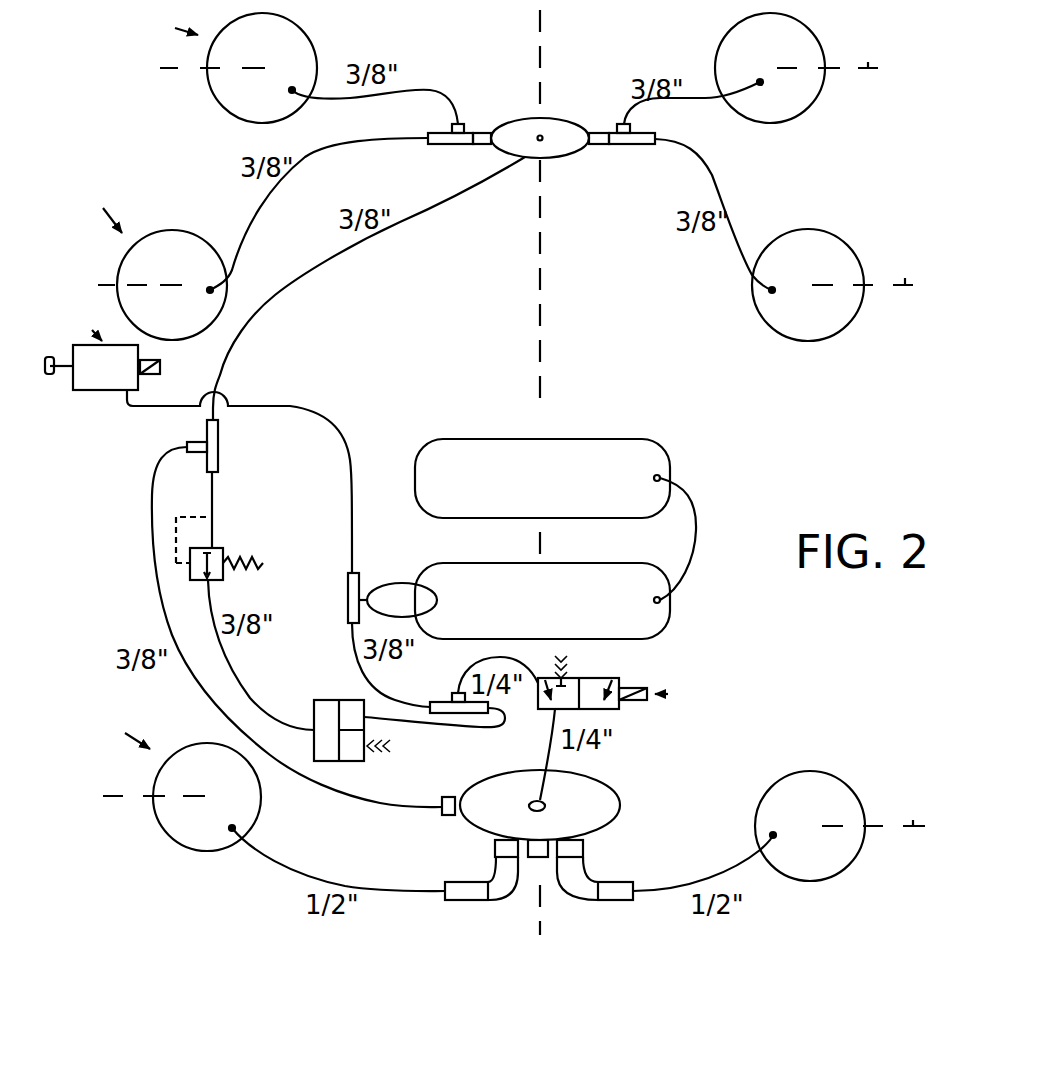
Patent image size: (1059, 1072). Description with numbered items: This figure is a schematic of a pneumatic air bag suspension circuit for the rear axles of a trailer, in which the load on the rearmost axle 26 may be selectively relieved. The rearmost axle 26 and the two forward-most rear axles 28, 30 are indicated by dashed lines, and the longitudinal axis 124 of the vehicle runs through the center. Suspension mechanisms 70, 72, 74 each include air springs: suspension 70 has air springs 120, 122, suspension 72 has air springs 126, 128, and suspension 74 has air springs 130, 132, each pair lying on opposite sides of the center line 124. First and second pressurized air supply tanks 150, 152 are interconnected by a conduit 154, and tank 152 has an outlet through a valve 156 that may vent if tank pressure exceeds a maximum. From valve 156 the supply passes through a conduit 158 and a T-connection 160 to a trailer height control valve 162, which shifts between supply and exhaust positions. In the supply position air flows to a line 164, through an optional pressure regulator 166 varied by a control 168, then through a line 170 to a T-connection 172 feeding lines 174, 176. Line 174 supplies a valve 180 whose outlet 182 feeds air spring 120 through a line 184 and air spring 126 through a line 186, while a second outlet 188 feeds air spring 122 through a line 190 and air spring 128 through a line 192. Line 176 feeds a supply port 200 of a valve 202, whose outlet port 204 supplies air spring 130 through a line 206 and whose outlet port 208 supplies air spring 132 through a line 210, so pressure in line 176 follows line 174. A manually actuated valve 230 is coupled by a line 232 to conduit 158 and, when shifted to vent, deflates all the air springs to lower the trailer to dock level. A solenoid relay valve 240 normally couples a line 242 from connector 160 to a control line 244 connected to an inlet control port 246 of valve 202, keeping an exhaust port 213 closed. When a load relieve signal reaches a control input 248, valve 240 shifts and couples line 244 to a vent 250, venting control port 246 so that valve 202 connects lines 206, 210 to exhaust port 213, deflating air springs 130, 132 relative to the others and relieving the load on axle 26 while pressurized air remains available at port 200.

The rearmost axle 26 is at (913, 820).
The forward-most rear axle 28 is at (905, 278).
The forward-most rear axle 30 is at (868, 62).
The suspension mechanism 70 is at (169, 26).
The suspension mechanism 72 is at (93, 209).
The suspension mechanism 74 is at (120, 727).
The air spring 120 is at (290, 38).
The air spring 122 is at (742, 36).
The longitudinal axis 124 is at (540, 14).
The air spring 126 is at (174, 240).
The air spring 128 is at (808, 242).
The air spring 130 is at (193, 838).
The air spring 132 is at (806, 875).
The pressurized air supply tank 150 is at (610, 447).
The pressurized air supply tank 152 is at (570, 570).
The conduit 154 is at (695, 550).
The valve 156 is at (390, 582).
The conduit 158 is at (334, 642).
The T-connection 160 is at (447, 712).
The trailer height control valve 162 is at (338, 761).
The line 164 is at (243, 687).
The pressure regulator 166 is at (236, 527).
The control 168 is at (258, 548).
The line 170 is at (212, 495).
The T-connection 172 is at (218, 443).
The line 174 is at (266, 290).
The line 176 is at (148, 539).
The valve 180 is at (553, 150).
The outlet 182 is at (474, 133).
The line 184 is at (412, 88).
The line 186 is at (332, 153).
The outlet 188 is at (590, 133).
The line 190 is at (702, 100).
The line 192 is at (713, 165).
The supply port 200 is at (452, 814).
The valve 202 is at (616, 820).
The outlet port 204 is at (498, 848).
The line 206 is at (372, 887).
The outlet port 208 is at (578, 847).
The line 210 is at (703, 884).
The exhaust port 213 is at (533, 858).
The manually actuated valve 230 is at (99, 346).
The line 232 is at (343, 445).
The solenoid relay valve 240 is at (599, 678).
The line 242 is at (478, 662).
The control line 244 is at (550, 737).
The inlet control port 246 is at (571, 804).
The control input 248 is at (670, 693).
The vent 250 is at (566, 660).